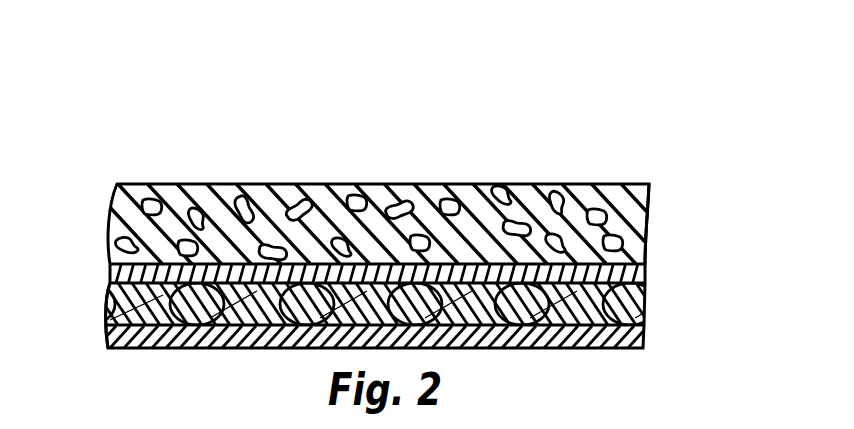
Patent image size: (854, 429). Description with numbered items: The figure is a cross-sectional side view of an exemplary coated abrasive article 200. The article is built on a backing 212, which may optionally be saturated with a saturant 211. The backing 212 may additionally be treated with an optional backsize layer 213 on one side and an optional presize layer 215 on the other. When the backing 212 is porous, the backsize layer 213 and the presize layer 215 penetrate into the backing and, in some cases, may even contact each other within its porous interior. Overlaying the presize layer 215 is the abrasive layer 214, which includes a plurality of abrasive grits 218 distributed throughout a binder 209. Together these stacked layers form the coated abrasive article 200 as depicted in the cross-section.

The coated abrasive article 200 is at (590, 117).
The binder 209 is at (430, 190).
The abrasive grits 218 is at (350, 190).
The abrasive layer 214 is at (648, 251).
The presize layer 215 is at (110, 273).
The backing 212 is at (646, 300).
The saturant 211 is at (108, 317).
The backsize layer 213 is at (644, 337).